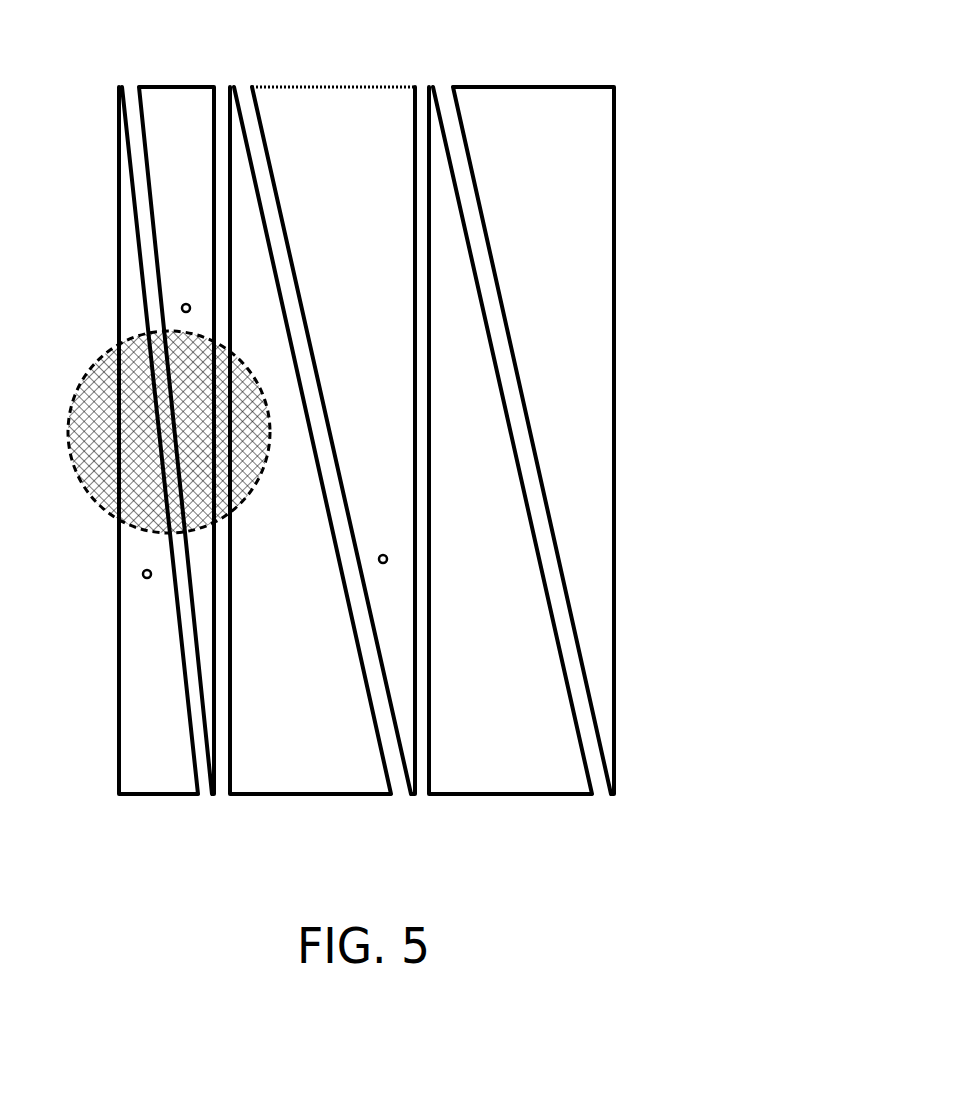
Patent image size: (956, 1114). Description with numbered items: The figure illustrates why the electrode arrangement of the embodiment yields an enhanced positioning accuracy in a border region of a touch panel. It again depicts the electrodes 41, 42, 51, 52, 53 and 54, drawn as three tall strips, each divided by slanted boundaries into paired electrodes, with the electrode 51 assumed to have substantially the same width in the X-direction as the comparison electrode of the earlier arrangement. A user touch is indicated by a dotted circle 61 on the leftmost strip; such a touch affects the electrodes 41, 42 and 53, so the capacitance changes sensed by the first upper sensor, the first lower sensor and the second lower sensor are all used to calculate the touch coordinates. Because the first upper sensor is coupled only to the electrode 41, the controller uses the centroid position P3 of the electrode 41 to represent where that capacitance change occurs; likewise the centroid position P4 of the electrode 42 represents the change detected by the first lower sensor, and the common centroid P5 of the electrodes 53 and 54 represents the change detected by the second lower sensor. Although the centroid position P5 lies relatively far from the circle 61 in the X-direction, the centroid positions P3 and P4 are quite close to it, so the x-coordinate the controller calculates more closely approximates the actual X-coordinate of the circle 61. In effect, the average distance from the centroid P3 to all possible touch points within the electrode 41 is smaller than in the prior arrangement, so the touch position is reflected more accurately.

The electrode 41 is at (175, 103).
The electrode 42 is at (150, 780).
The electrode 51 is at (311, 102).
The electrode 52 is at (570, 102).
The electrode 53 is at (288, 780).
The electrode 54 is at (547, 780).
The dotted circle 61 is at (100, 458).
The centroid position P3 is at (181, 306).
The centroid position P4 is at (143, 578).
The common centroid P5 is at (388, 559).